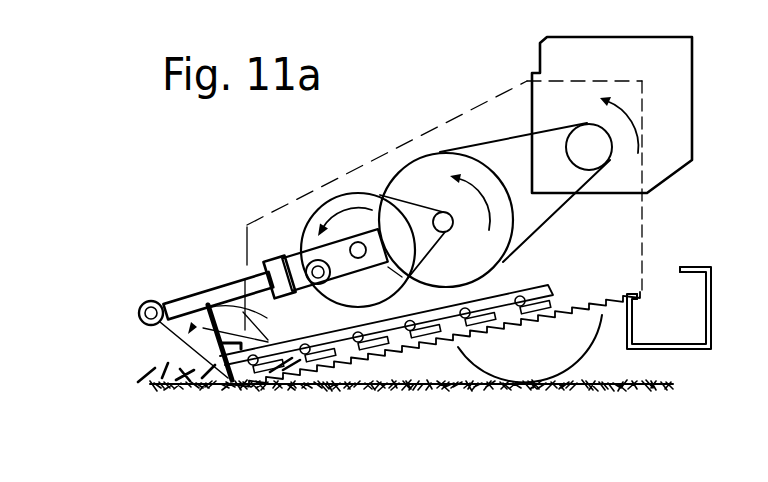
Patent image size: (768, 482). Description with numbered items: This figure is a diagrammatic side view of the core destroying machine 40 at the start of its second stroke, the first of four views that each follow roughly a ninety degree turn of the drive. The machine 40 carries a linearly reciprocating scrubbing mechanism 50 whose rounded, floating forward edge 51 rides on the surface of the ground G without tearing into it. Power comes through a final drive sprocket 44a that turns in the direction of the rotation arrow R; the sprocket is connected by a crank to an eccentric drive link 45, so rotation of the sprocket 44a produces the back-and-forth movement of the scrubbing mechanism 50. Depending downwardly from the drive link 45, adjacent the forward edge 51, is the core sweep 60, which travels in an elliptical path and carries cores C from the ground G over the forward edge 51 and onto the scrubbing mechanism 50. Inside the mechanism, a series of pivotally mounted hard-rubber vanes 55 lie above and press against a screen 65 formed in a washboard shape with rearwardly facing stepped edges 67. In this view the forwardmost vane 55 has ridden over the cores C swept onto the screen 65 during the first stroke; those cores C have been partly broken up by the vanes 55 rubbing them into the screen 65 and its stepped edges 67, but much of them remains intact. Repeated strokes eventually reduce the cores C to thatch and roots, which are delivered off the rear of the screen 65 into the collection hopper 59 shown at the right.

The core destroying machine 40 is at (270, 130).
The final drive sprocket 44a is at (344, 209).
The rotation arrow R is at (318, 187).
The drive link 45 is at (236, 282).
The core sweep 60 is at (193, 366).
The forward edge 51 is at (230, 382).
The vanes 55 is at (268, 366).
The screen 65 is at (410, 340).
The stepped edges 67 is at (578, 300).
The scrubbing mechanism 50 is at (556, 247).
The collection hopper 59 is at (692, 266).
The ground G is at (600, 382).
The cores C is at (157, 377).